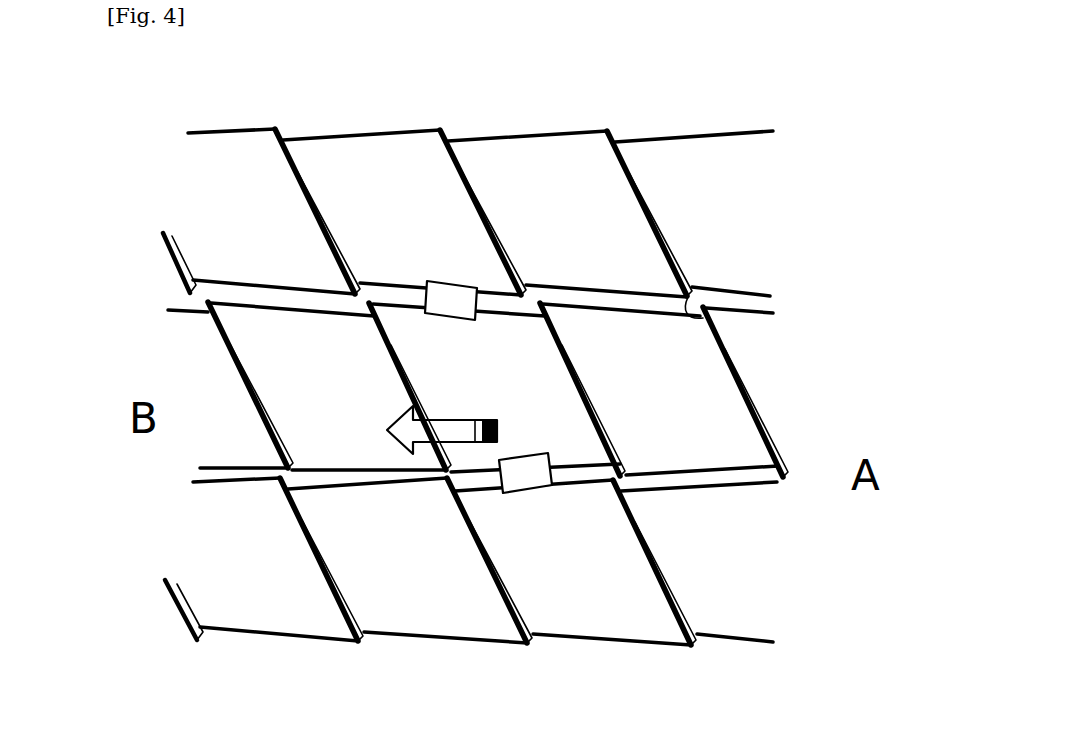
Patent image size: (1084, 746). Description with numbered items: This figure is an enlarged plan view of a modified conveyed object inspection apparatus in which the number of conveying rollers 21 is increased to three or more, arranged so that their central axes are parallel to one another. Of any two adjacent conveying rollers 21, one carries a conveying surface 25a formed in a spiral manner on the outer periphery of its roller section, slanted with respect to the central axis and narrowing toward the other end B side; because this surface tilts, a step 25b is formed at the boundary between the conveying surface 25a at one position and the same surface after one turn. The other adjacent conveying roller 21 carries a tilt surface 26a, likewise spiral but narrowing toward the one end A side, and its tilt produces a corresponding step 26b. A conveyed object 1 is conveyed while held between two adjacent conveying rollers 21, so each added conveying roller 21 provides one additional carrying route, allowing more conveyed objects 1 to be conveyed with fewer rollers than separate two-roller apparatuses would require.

The conveyed object 1 is at (438, 281).
The conveying roller 21 is at (497, 138).
The conveying surface 25a is at (370, 157).
The step 25b is at (337, 240).
The tilt surface 26a is at (692, 413).
The step 26b is at (684, 312).